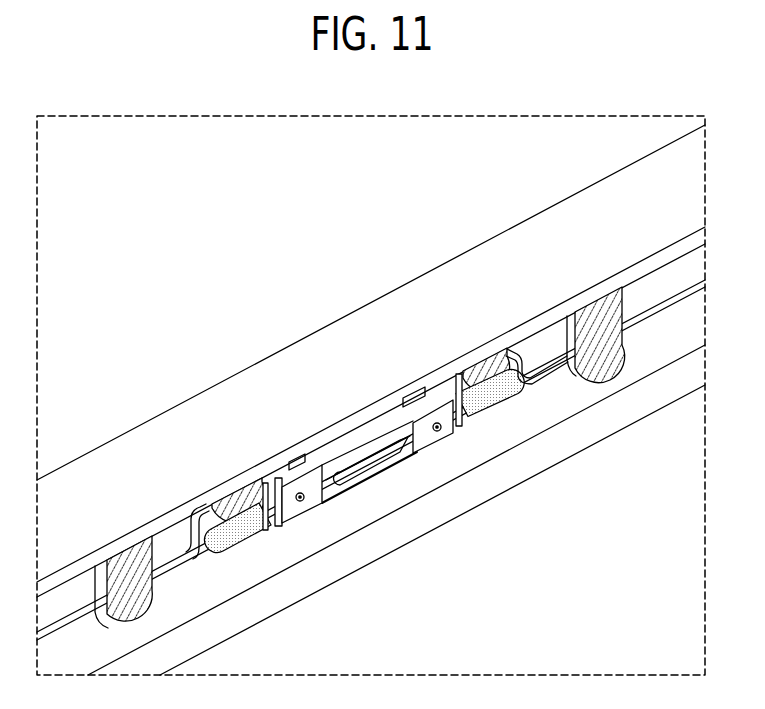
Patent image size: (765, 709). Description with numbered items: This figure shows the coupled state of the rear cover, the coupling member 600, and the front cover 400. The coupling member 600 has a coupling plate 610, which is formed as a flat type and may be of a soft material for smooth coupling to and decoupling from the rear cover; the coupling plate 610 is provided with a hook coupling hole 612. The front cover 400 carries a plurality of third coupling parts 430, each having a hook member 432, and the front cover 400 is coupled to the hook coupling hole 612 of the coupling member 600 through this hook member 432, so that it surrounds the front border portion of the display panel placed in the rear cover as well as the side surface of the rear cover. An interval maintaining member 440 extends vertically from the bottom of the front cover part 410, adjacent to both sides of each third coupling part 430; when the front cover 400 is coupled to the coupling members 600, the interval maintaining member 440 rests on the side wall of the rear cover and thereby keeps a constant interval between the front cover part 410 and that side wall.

The front cover 400 is at (262, 310).
The front cover part 410 is at (457, 310).
The third coupling part 430 is at (394, 410).
The hook member 432 is at (385, 448).
The interval maintaining member 440 is at (597, 365).
The coupling member 600 is at (263, 492).
The coupling plate 610 is at (316, 476).
The hook coupling hole 612 is at (362, 467).